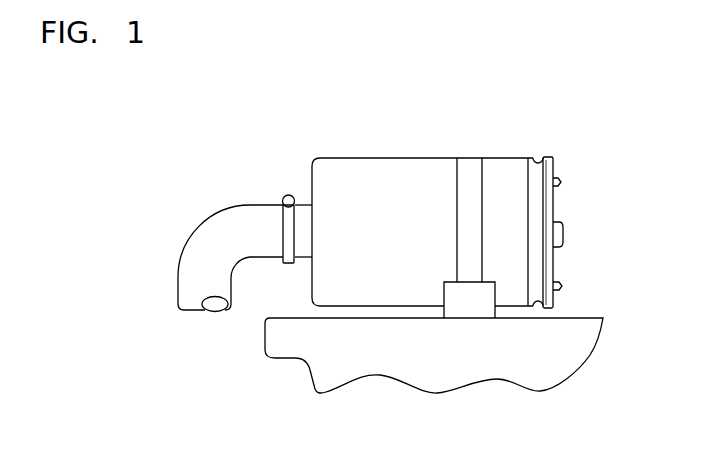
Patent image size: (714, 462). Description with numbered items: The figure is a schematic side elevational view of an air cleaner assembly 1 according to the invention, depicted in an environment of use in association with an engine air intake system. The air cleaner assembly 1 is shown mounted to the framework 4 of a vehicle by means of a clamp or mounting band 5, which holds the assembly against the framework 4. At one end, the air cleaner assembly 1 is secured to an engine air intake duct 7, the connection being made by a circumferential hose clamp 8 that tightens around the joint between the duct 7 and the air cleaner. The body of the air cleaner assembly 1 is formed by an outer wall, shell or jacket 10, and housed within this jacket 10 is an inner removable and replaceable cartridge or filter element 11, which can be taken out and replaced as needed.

The air cleaner assembly 1 is at (563, 123).
The framework 4 is at (542, 343).
The clamp or mounting band 5 is at (468, 158).
The engine air intake duct 7 is at (199, 224).
The circumferential hose clamp 8 is at (278, 187).
The outer wall, shell or jacket 10 is at (375, 158).
The cartridge or filter element 11 is at (553, 181).